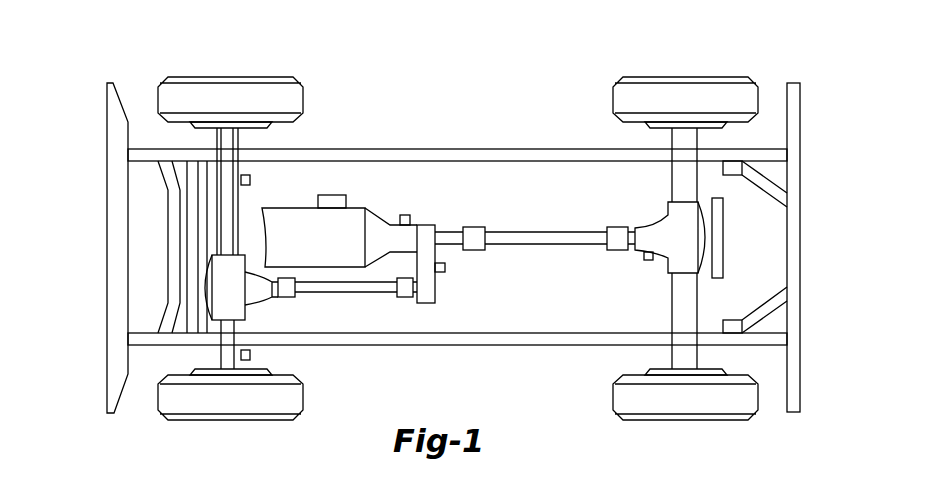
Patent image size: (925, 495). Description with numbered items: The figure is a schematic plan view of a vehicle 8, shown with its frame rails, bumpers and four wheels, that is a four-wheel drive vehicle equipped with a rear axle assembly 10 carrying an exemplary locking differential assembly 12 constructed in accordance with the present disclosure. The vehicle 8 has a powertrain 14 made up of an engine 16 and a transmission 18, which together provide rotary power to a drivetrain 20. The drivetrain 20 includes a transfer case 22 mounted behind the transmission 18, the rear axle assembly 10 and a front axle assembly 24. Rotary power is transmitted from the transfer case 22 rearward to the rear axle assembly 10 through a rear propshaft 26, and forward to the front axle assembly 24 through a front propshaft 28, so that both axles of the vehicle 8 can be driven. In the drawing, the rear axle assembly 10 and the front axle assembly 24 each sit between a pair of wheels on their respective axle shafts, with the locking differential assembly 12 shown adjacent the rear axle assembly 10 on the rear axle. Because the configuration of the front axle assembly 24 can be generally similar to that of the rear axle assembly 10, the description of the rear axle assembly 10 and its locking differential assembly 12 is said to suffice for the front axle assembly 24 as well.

The vehicle 8 is at (528, 50).
The rear axle assembly 10 is at (660, 188).
The locking differential assembly 12 is at (685, 242).
The powertrain 14 is at (338, 190).
The engine 16 is at (288, 210).
The transmission 18 is at (380, 220).
The drivetrain 20 is at (535, 276).
The transfer case 22 is at (428, 226).
The front axle assembly 24 is at (250, 260).
The rear propshaft 26 is at (503, 306).
The front propshaft 28 is at (349, 295).